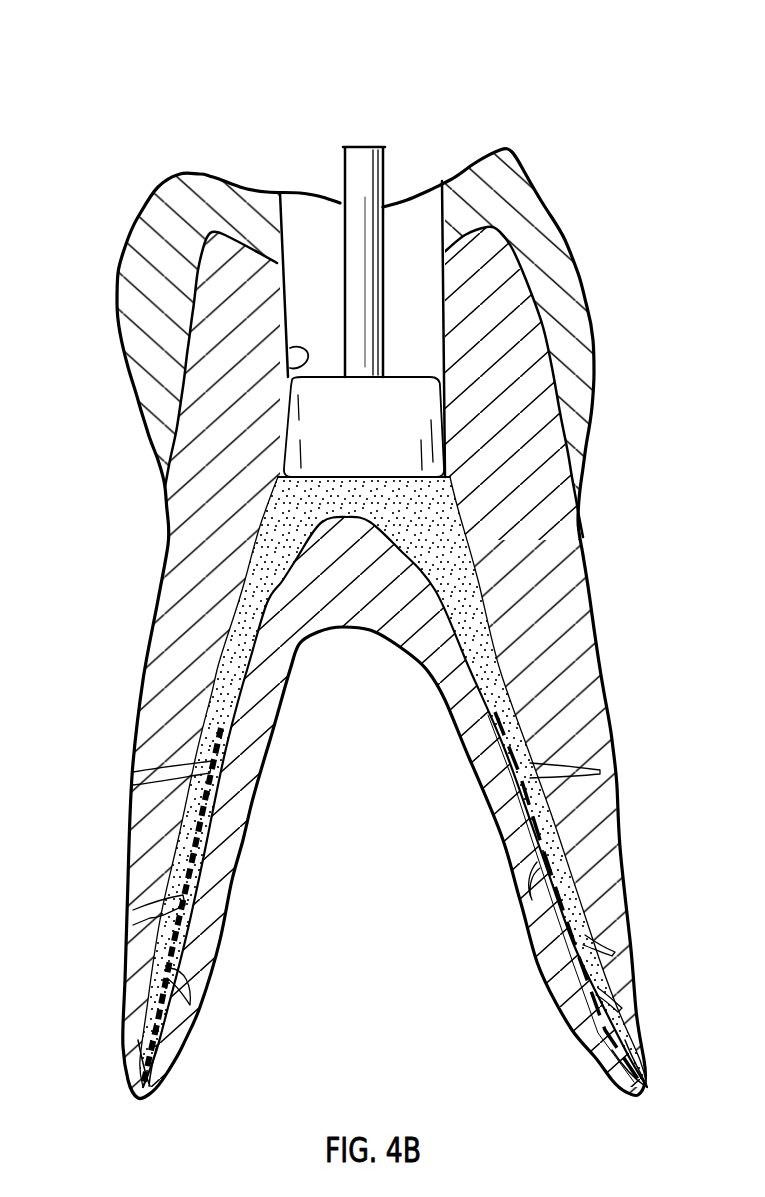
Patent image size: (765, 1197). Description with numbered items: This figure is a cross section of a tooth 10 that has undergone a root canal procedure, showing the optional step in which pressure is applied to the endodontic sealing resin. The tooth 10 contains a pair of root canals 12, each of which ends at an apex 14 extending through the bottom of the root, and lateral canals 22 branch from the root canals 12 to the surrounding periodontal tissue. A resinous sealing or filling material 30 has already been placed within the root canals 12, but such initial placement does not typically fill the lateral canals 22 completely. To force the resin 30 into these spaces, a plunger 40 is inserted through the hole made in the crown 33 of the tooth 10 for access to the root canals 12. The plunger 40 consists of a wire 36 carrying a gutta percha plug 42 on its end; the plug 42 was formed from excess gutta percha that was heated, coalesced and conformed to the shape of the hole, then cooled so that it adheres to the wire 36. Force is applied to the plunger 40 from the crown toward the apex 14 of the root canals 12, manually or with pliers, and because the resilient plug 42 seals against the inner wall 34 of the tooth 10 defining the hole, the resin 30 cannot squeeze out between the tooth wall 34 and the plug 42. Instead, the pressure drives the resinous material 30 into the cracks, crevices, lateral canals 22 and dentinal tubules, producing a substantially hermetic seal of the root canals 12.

The tooth 10 is at (390, 556).
The root canal 12 is at (222, 724).
The apex 14 is at (150, 1013).
The lateral canals 22 is at (147, 910).
The resinous sealing or filling material 30 is at (440, 497).
The crown 33 is at (540, 148).
The inner wall 34 is at (290, 348).
The wire 36 is at (343, 178).
The plunger 40 is at (395, 245).
The gutta percha plug 42 is at (447, 427).